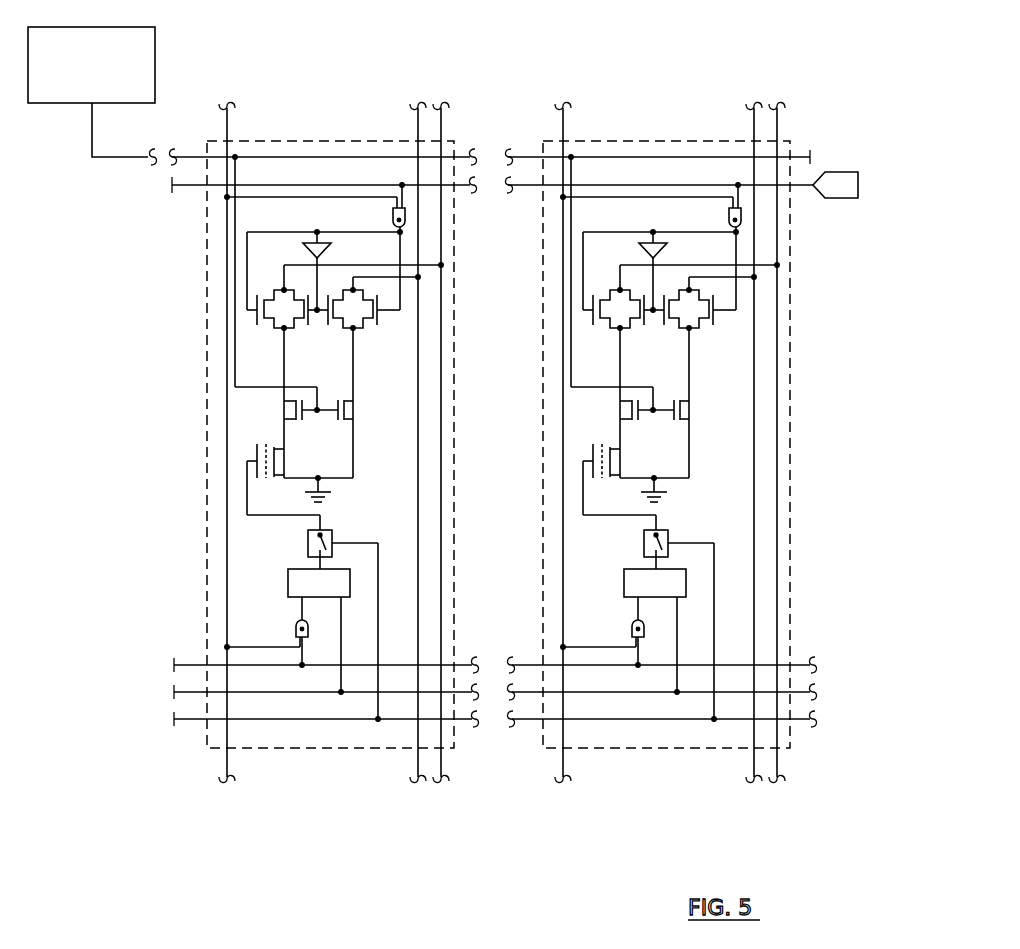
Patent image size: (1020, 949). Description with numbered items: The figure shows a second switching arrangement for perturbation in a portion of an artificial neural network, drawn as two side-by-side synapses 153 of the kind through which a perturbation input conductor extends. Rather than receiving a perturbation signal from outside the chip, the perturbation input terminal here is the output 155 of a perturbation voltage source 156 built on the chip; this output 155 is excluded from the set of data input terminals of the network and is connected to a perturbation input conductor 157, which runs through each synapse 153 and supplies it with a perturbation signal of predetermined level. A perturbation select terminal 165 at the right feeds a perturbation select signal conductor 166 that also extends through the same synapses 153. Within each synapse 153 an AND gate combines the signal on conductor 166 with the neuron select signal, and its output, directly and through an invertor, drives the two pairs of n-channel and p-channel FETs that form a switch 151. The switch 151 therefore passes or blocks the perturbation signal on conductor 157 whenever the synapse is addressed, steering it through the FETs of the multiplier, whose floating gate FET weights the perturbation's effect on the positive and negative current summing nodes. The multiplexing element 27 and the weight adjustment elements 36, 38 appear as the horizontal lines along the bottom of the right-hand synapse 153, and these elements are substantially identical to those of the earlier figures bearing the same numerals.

The perturbation voltage source 156 is at (157, 47).
The output of perturbation voltage source 155 is at (92, 127).
The perturbation input conductor 157 is at (265, 157).
The perturbation select signal conductor 166 is at (330, 185).
The perturbation select terminal 165 is at (848, 172).
The switch 151 is at (578, 317).
The synapse 153 is at (533, 353).
The multiplexing element 27 is at (534, 662).
The weight adjustment element 36 is at (538, 692).
The weight adjustment element 38 is at (542, 719).